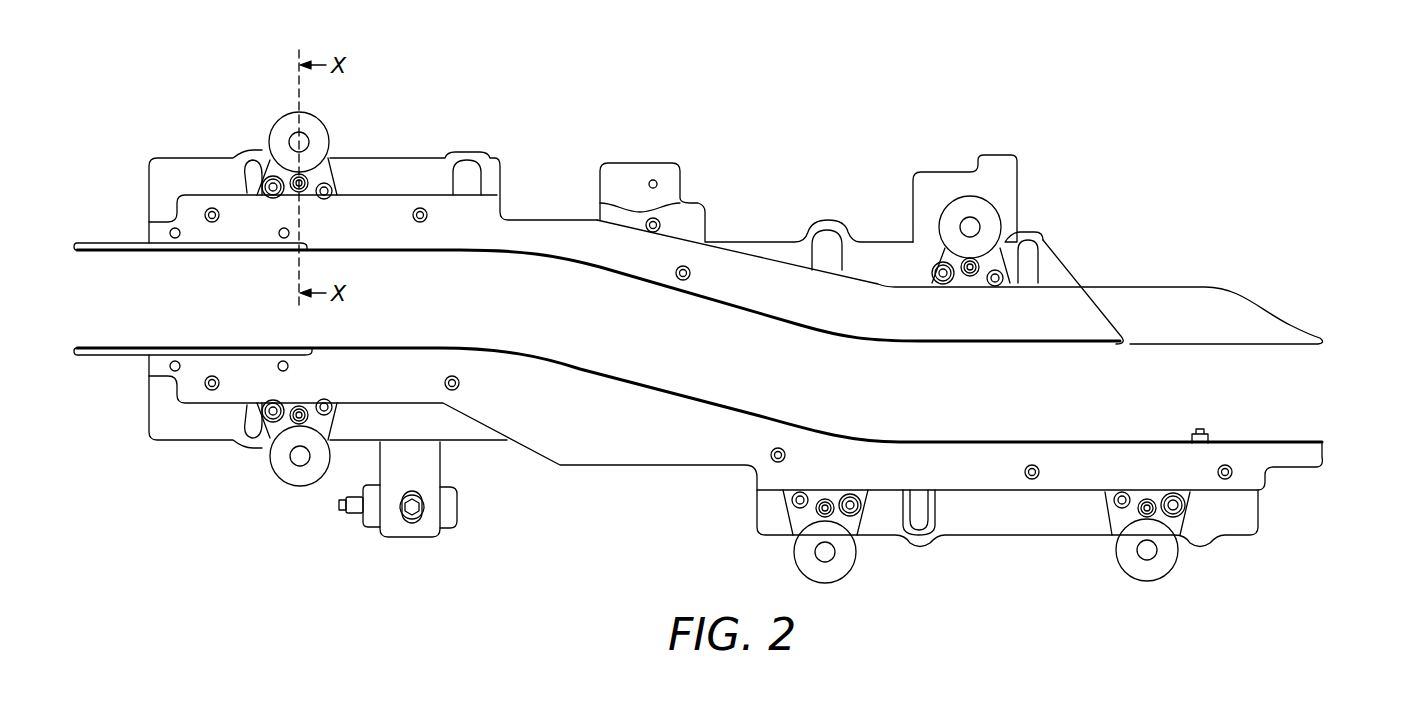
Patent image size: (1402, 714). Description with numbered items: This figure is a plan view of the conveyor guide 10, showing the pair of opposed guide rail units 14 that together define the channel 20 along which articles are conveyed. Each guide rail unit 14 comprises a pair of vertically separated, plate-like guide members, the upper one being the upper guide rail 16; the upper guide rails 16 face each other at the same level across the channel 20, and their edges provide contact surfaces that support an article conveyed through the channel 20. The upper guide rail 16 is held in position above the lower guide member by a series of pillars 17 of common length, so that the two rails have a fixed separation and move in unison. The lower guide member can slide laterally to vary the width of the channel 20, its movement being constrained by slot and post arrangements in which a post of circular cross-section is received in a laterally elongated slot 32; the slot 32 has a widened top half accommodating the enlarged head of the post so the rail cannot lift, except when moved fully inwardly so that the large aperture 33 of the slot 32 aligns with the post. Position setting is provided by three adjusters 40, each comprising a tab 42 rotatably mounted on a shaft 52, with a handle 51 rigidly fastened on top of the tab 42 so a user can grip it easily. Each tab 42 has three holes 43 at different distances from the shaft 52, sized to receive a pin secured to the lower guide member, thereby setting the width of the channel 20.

The conveyor guide 10 is at (1035, 90).
The guide rail unit 14 is at (1134, 266).
The upper guide rail 16 is at (768, 272).
The pillar 17 is at (688, 267).
The channel 20 is at (1308, 395).
The slot 32 is at (932, 520).
The large aperture 33 is at (1036, 255).
The adjuster 40 is at (280, 491).
The tab 42 is at (1120, 515).
The hole 43 is at (336, 188).
The handle 51 is at (1150, 575).
The shaft 52 is at (1152, 553).